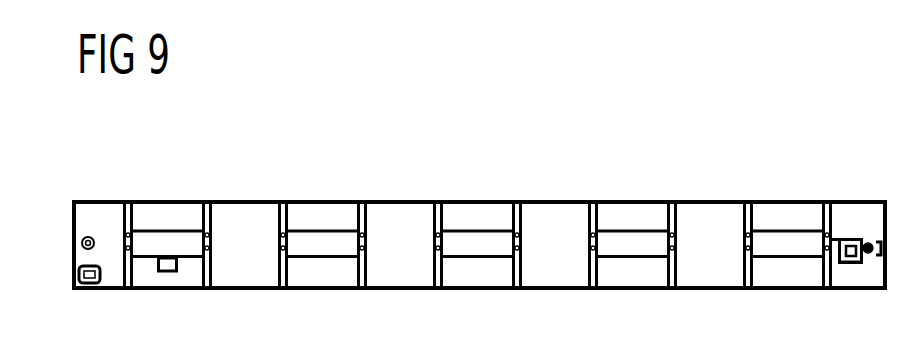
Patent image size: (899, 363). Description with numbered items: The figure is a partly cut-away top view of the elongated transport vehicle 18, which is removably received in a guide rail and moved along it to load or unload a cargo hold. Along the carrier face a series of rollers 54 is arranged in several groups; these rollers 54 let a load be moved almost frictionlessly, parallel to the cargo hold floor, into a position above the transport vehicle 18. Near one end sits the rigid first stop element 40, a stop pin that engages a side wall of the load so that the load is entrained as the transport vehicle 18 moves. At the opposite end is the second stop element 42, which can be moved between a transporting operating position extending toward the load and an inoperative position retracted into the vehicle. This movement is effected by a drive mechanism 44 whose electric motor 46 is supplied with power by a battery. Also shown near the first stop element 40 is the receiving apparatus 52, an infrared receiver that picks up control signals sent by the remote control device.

The transport vehicle 18 is at (726, 151).
The first stop element 40 is at (85, 236).
The second stop element 42 is at (870, 242).
The drive mechanism 44 is at (839, 238).
The motor 46 is at (860, 264).
The receiving apparatus 52 is at (92, 284).
The rollers 54 is at (167, 247).